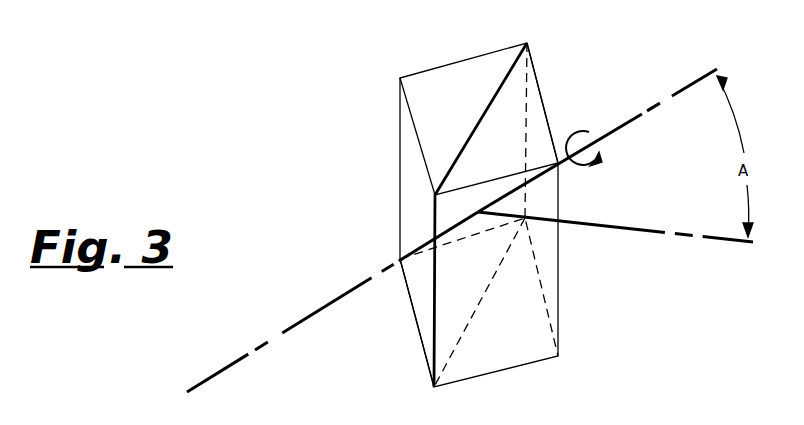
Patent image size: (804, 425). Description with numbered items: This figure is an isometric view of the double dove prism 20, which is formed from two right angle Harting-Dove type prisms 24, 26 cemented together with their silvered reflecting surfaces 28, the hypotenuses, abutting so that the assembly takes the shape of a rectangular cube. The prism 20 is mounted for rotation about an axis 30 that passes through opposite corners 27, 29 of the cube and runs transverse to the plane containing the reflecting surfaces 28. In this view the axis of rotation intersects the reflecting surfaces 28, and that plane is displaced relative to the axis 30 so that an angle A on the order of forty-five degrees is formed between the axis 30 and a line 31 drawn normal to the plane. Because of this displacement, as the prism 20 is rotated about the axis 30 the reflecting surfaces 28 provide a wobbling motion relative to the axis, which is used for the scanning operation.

The double dove prism 20 is at (421, 72).
The right angle Harting-Dove type prism 24 is at (421, 323).
The right angle Harting-Dove type prism 26 is at (541, 76).
The corner of the cube 27 is at (560, 162).
The reflecting surface 28 is at (491, 101).
The corner of the cube 29 is at (398, 258).
The axis of rotation 30 is at (691, 80).
The line normal to the plane 31 is at (653, 236).